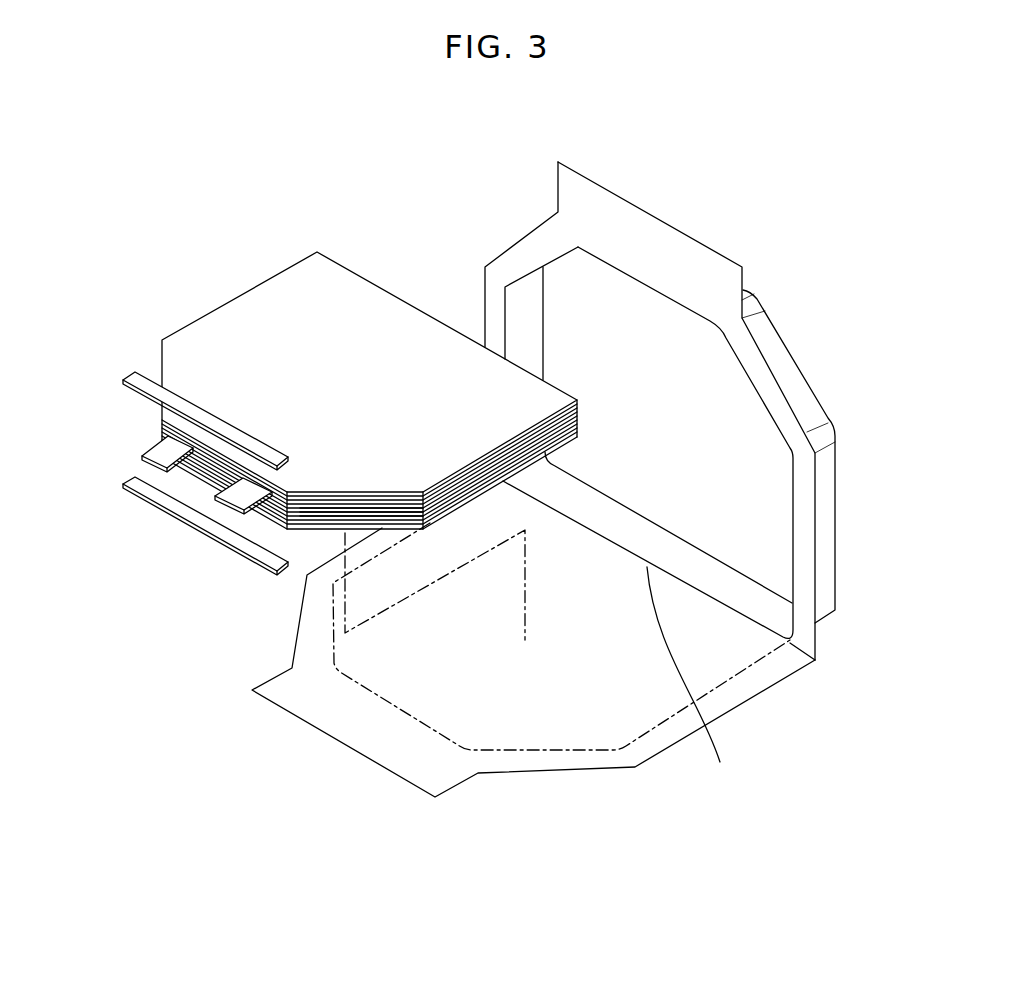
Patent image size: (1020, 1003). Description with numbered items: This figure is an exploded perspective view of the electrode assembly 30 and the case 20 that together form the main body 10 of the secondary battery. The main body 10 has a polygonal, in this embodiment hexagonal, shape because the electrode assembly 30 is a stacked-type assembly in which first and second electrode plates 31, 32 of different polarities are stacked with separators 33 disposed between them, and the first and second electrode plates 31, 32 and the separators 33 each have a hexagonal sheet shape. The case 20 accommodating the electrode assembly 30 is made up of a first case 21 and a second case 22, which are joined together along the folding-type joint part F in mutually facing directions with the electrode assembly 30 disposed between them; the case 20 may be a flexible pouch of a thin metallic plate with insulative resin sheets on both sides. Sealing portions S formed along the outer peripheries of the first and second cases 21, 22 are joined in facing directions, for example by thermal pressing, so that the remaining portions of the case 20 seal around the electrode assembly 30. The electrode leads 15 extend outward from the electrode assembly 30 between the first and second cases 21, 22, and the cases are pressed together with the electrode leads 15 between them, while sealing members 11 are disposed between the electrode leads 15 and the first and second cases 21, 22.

The main body 10 is at (797, 370).
The sealing member 11 is at (138, 373).
The electrode lead 15 is at (140, 453).
The case 20 is at (595, 522).
The first case 21 is at (827, 548).
The second case 22 is at (893, 605).
The electrode assembly 30 is at (369, 383).
The first electrode plate 31 is at (392, 492).
The second electrode plate 32 is at (326, 492).
The separator 33 is at (355, 492).
The sealing portion S is at (803, 522).
The folding-type joint part F is at (690, 679).